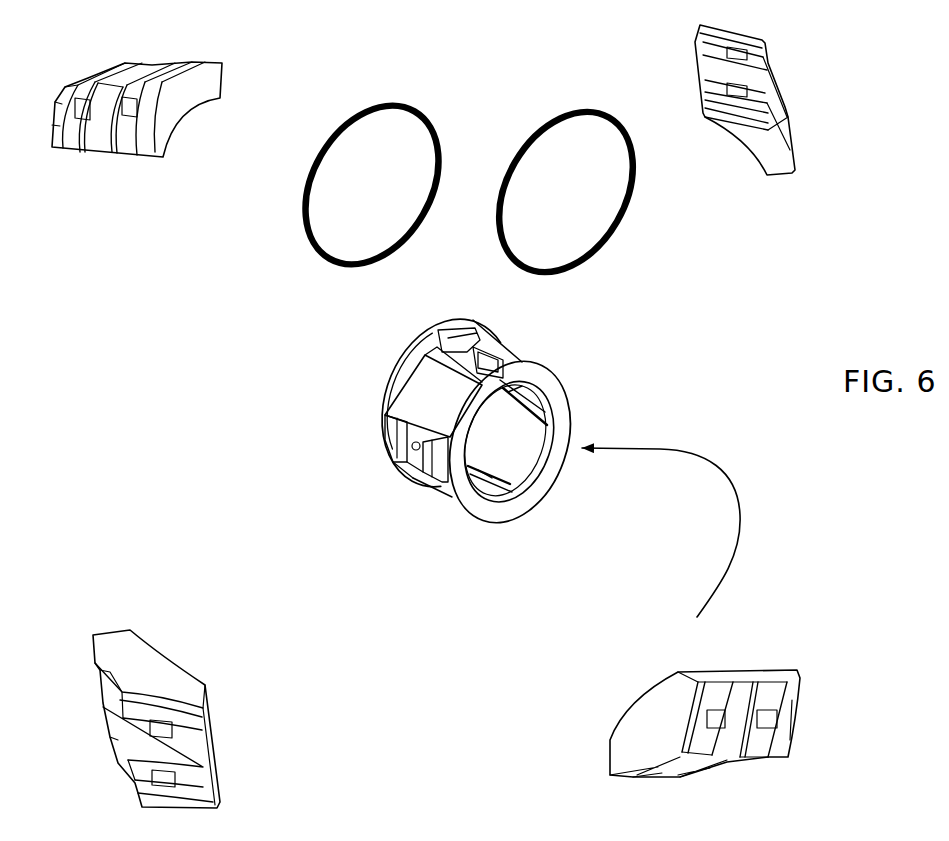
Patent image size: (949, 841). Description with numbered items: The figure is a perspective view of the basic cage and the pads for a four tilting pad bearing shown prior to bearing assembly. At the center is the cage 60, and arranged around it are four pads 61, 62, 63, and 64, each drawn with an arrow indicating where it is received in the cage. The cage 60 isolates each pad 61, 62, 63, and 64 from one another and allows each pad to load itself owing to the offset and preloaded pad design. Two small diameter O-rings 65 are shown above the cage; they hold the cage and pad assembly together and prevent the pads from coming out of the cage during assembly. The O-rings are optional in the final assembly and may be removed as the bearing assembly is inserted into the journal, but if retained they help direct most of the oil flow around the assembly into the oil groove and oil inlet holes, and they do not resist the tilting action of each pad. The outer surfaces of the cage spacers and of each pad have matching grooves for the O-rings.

The cage 60 is at (378, 409).
The pad 61 is at (433, 395).
The pad 62 is at (545, 343).
The pad 63 is at (797, 711).
The pad 64 is at (438, 502).
The O-ring 65 is at (452, 335).